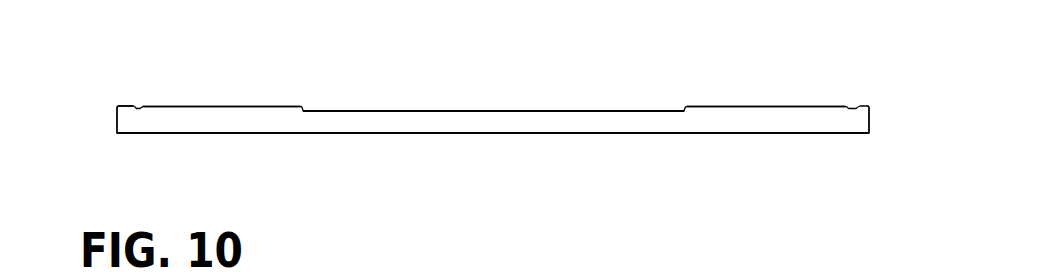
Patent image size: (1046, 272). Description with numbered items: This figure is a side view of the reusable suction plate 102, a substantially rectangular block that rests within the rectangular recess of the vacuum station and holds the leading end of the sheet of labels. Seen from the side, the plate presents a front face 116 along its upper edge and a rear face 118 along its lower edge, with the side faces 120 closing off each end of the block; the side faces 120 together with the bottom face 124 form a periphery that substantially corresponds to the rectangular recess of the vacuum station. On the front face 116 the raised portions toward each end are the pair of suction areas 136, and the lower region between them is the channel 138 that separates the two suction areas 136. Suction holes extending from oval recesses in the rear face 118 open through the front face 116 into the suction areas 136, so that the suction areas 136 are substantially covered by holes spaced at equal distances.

The reusable suction plate 102 is at (538, 80).
The front face 116 is at (400, 110).
The rear face 118 is at (462, 137).
The side faces 120 is at (117, 118).
The bottom face 124 is at (527, 118).
The suction areas 136 is at (215, 105).
The channel 138 is at (492, 112).